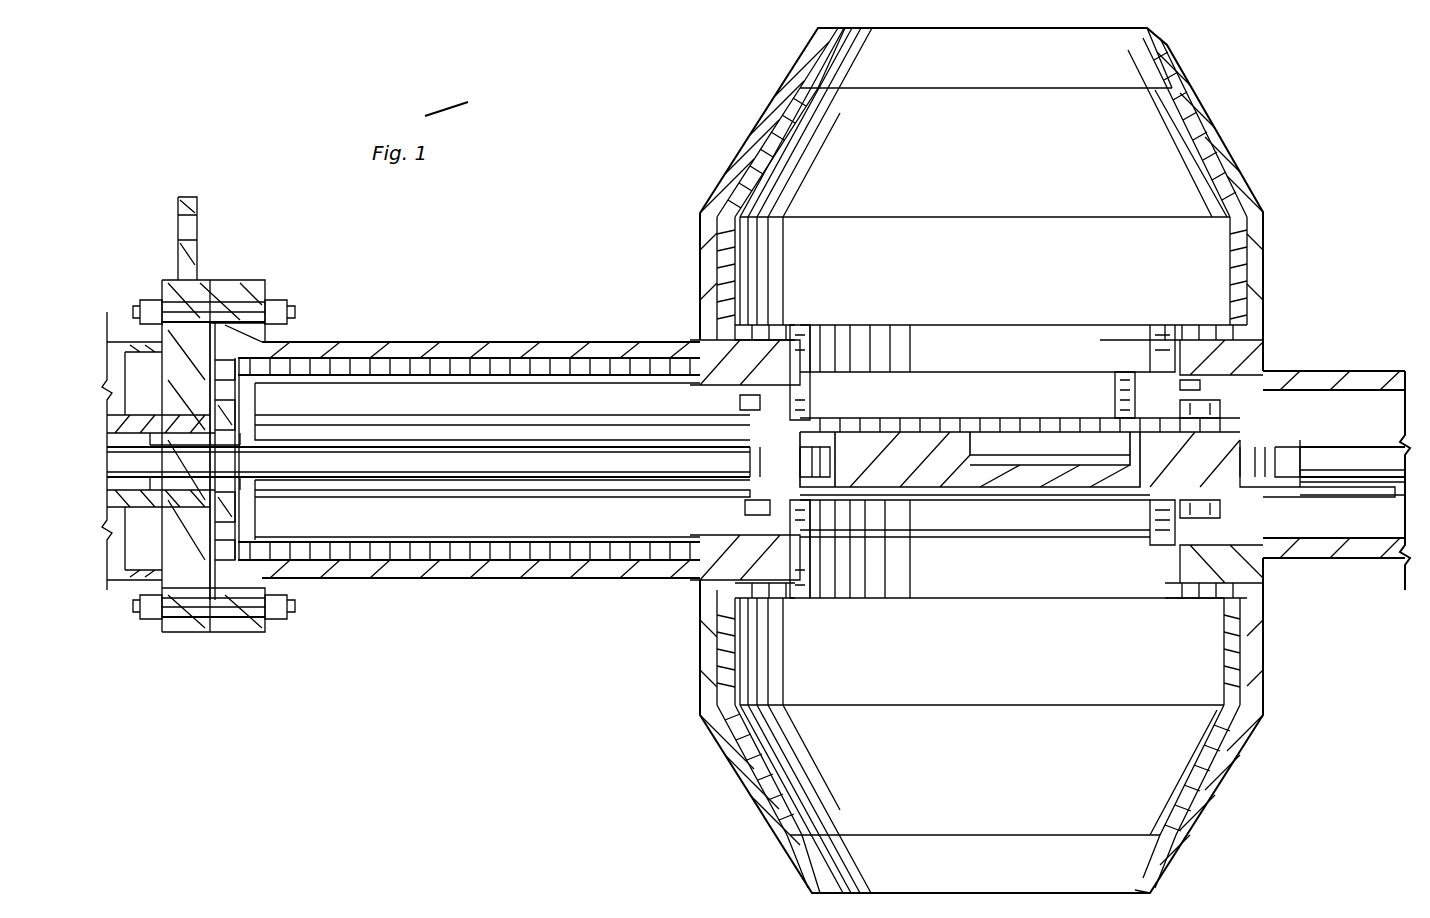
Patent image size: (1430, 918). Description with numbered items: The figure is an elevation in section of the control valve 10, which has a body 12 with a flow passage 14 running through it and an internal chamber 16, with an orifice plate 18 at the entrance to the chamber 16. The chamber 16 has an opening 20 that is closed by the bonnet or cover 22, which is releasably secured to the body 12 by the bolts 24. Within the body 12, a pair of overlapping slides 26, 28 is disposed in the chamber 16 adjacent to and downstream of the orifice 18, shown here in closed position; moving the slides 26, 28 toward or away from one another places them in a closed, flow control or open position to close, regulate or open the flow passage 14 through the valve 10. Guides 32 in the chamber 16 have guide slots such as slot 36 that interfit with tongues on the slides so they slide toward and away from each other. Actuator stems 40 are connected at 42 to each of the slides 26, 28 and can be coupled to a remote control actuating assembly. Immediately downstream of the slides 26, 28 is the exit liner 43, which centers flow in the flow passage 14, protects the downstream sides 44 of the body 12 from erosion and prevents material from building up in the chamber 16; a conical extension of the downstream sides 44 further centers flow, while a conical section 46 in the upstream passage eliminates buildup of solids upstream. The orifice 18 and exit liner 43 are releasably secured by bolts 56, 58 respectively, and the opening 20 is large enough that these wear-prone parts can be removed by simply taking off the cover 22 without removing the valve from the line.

The control valve 10 is at (692, 270).
The body 12 is at (1265, 272).
The flow passage 14 is at (1000, 190).
The internal chamber 16 is at (425, 335).
The orifice plate 18 is at (1115, 385).
The opening 20 is at (258, 545).
The bonnet or cover 22 is at (182, 640).
The bolts 24 is at (225, 640).
The slide 26 is at (965, 418).
The slide 28 is at (1018, 478).
The guides 32 is at (445, 498).
The guide slot 36 is at (1310, 447).
The actuator stems 40 is at (532, 472).
The connection 42 is at (800, 458).
The exit liner 43 is at (1150, 510).
The downstream sides 44 is at (1180, 780).
The conical section 46 is at (1175, 120).
The bolts 56 is at (1215, 415).
The bolts 58 is at (1208, 505).